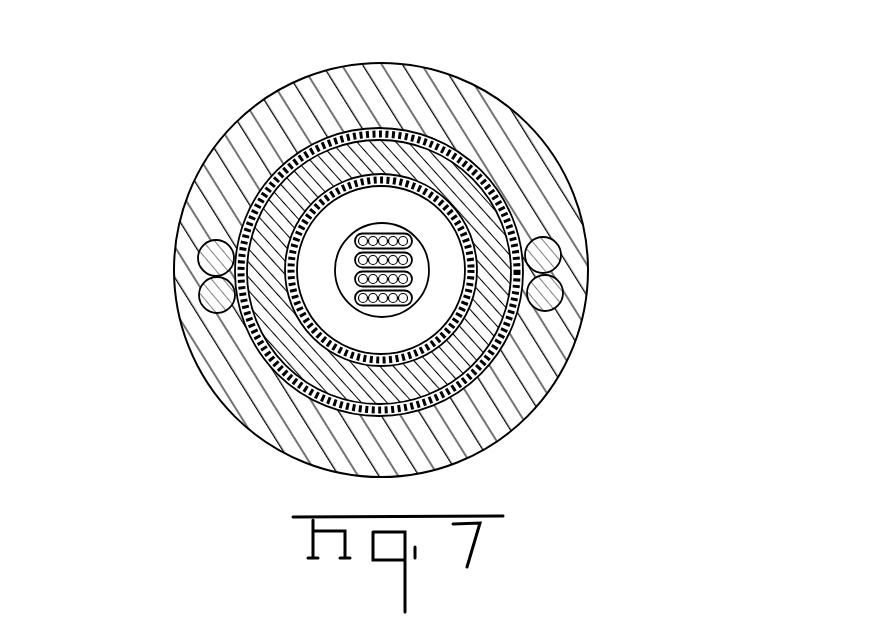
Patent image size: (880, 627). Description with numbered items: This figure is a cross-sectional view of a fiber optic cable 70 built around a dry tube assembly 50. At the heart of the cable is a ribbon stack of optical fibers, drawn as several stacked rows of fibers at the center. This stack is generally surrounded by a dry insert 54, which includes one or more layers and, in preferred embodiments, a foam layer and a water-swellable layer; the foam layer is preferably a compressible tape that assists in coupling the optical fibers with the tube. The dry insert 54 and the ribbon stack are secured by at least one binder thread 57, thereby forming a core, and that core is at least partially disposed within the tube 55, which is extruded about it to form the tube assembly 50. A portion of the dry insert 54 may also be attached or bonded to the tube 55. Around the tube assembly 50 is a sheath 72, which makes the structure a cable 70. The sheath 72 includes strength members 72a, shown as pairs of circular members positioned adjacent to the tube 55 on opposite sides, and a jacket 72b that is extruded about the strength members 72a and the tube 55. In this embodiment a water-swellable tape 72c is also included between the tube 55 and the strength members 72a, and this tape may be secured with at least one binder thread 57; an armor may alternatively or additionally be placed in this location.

The cable 70 is at (225, 97).
The sheath 72 is at (243, 148).
The strength members 72a is at (212, 242).
The jacket 72b is at (222, 367).
The water-swellable tape 72c is at (560, 360).
The binder thread 57 is at (375, 127).
The tube 55 is at (443, 173).
The dry insert 54 is at (465, 209).
The dry tube assembly 50 is at (490, 290).